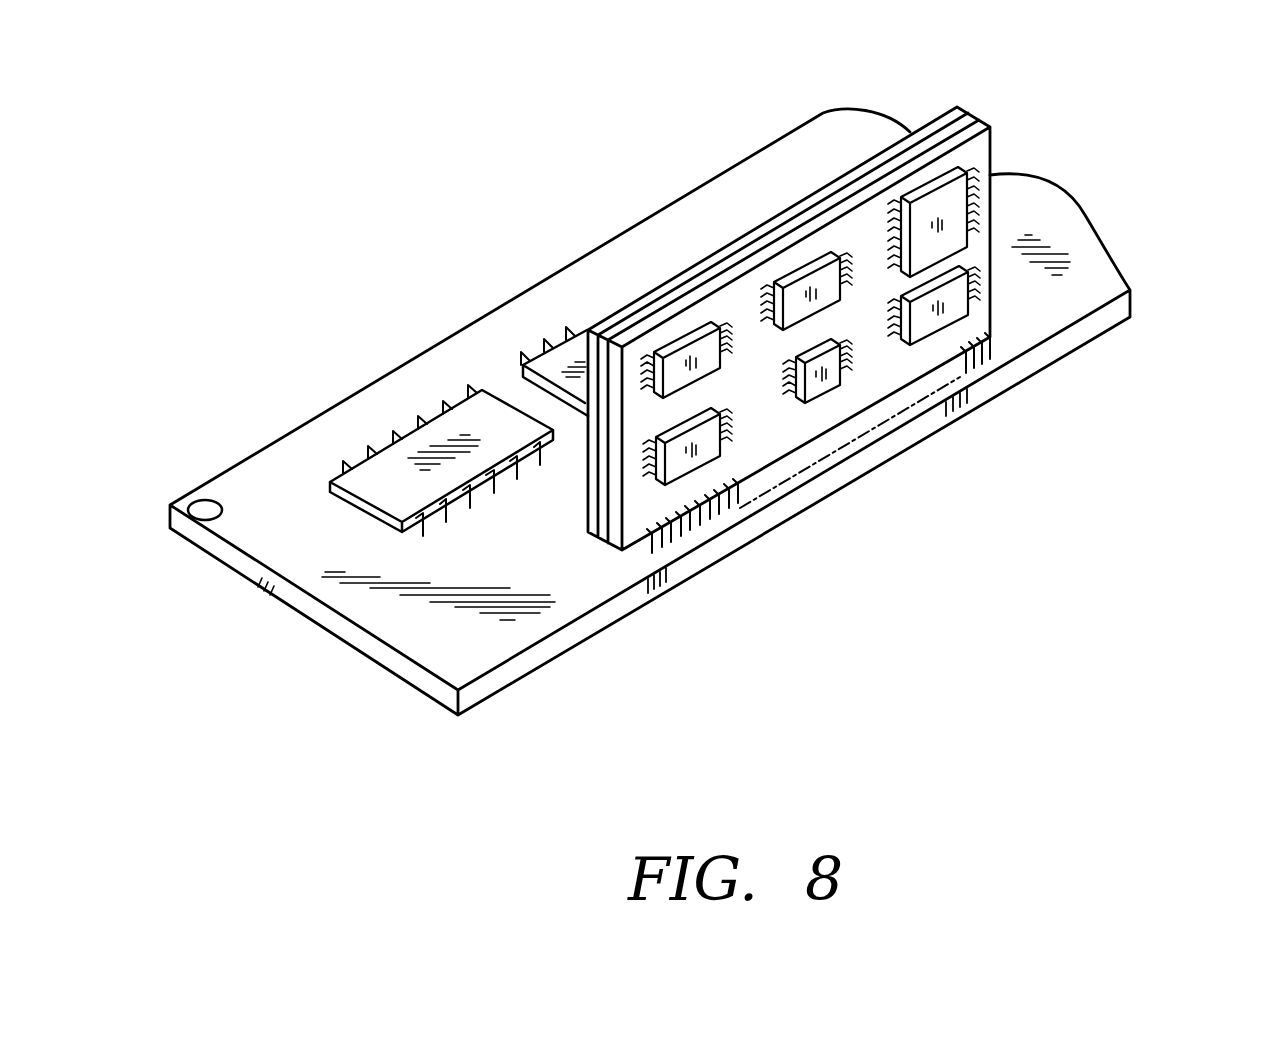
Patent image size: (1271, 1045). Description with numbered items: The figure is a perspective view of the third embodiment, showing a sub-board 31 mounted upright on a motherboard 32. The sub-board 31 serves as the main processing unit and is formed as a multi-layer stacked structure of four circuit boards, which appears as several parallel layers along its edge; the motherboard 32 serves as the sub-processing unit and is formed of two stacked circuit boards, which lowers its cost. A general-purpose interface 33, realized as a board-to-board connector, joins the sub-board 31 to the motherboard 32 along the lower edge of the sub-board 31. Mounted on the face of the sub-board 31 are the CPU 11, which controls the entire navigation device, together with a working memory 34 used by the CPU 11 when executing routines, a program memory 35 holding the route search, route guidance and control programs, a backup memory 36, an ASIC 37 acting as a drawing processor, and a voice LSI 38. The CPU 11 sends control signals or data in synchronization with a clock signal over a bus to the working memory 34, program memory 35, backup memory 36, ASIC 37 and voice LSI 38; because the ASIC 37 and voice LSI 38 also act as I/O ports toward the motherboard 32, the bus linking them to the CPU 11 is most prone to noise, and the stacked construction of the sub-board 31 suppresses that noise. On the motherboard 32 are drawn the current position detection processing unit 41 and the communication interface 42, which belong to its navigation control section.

The CPU 11 is at (693, 357).
The sub-board 31 is at (993, 137).
The motherboard 32 is at (1102, 259).
The general-purpose interface 33 is at (708, 520).
The working memory 34 is at (810, 290).
The program memory 35 is at (702, 448).
The backup memory 36 is at (837, 383).
The ASIC 37 is at (947, 200).
The voice LSI 38 is at (942, 313).
The current position detection processing unit 41 is at (475, 420).
The communication interface 42 is at (557, 353).